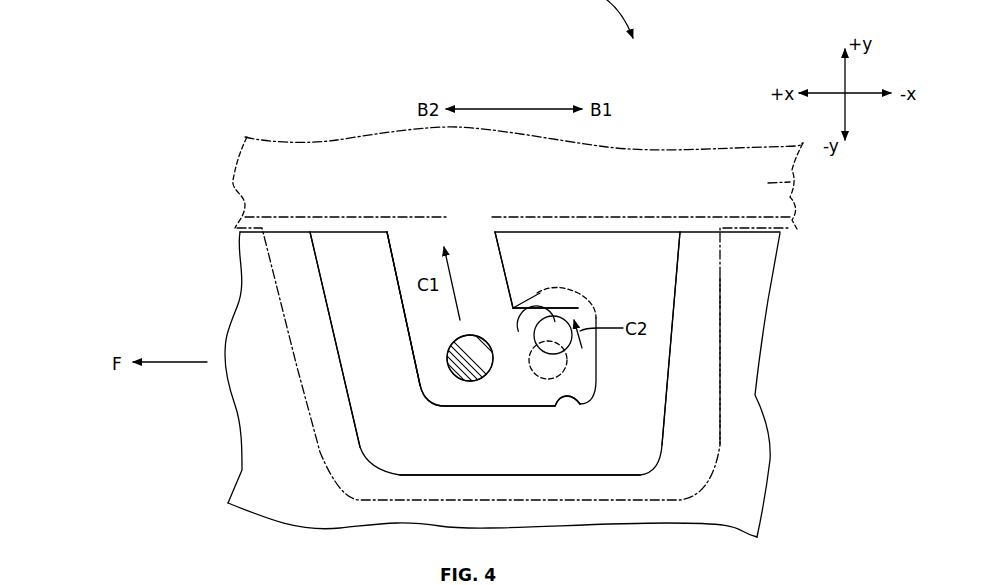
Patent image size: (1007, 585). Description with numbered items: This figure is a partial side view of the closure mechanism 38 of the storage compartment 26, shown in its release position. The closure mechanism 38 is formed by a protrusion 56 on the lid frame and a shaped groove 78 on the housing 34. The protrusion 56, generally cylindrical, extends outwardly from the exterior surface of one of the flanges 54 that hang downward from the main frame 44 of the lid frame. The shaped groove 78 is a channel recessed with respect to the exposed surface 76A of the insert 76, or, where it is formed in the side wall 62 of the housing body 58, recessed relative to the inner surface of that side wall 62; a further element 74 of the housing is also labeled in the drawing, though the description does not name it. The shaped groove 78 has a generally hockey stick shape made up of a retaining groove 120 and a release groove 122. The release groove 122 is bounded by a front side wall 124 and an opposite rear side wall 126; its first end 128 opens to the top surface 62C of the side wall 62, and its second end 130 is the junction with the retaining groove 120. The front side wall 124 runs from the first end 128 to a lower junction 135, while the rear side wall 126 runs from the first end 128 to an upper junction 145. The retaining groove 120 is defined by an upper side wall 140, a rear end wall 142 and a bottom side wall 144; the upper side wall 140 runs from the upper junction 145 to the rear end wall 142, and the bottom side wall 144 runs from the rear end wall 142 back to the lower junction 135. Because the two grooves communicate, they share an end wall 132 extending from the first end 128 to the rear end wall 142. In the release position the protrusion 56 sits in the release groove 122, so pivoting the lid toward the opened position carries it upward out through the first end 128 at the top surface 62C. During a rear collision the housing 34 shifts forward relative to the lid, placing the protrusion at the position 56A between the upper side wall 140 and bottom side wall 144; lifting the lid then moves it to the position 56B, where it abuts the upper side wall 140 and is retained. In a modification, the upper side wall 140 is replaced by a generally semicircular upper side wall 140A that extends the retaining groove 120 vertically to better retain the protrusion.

The storage compartment 26 is at (212, 88).
The housing 34 is at (887, 453).
The closure mechanism 38 is at (188, 252).
The main frame 44 is at (800, 192).
The flanges 54 is at (720, 277).
The protrusion 56 is at (466, 362).
The protrusion (collision position) 56A is at (598, 347).
The protrusion (retained position) 56B is at (577, 310).
The housing body 58 is at (128, 463).
The side wall 62 is at (733, 505).
The top surface 62C is at (766, 233).
The channel wall 74 is at (657, 407).
The insert 76 is at (660, 444).
The exposed surface 76A is at (640, 460).
The shaped groove 78 is at (526, 280).
The retaining groove 120 is at (518, 385).
The release groove 122 is at (427, 313).
The front side wall 124 is at (400, 299).
The rear side wall 126 is at (503, 270).
The first end 128 is at (412, 243).
The second end 130 is at (468, 388).
The end wall 132 is at (482, 253).
The lower junction 135 is at (432, 400).
The upper side wall 140 is at (512, 309).
The upper side wall (modified) 140A is at (558, 303).
The rear end wall 142 is at (590, 383).
The bottom side wall 144 is at (580, 402).
The upper junction 145 is at (513, 308).